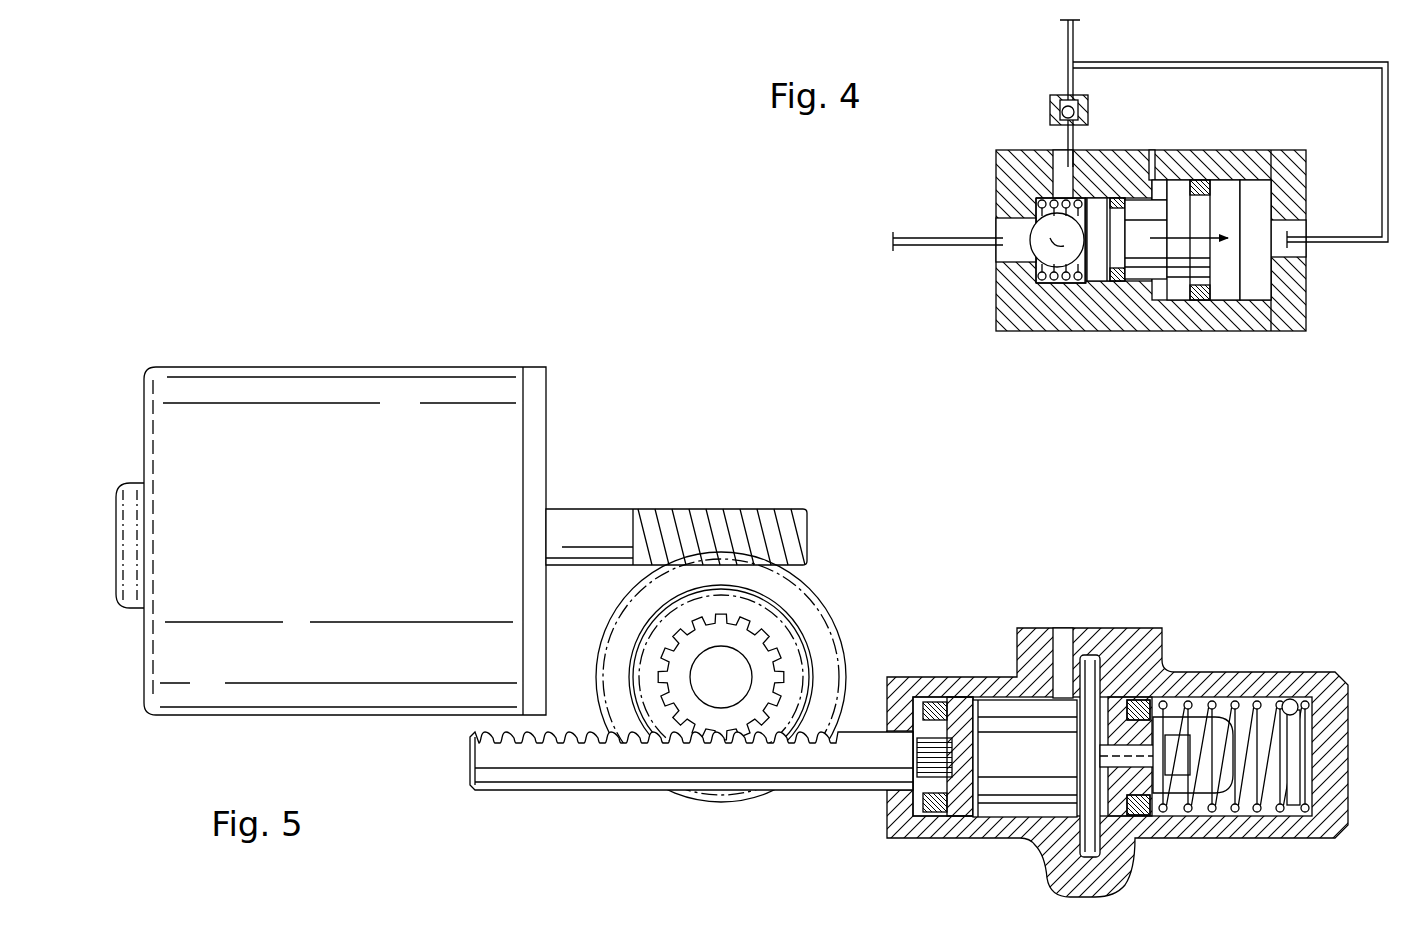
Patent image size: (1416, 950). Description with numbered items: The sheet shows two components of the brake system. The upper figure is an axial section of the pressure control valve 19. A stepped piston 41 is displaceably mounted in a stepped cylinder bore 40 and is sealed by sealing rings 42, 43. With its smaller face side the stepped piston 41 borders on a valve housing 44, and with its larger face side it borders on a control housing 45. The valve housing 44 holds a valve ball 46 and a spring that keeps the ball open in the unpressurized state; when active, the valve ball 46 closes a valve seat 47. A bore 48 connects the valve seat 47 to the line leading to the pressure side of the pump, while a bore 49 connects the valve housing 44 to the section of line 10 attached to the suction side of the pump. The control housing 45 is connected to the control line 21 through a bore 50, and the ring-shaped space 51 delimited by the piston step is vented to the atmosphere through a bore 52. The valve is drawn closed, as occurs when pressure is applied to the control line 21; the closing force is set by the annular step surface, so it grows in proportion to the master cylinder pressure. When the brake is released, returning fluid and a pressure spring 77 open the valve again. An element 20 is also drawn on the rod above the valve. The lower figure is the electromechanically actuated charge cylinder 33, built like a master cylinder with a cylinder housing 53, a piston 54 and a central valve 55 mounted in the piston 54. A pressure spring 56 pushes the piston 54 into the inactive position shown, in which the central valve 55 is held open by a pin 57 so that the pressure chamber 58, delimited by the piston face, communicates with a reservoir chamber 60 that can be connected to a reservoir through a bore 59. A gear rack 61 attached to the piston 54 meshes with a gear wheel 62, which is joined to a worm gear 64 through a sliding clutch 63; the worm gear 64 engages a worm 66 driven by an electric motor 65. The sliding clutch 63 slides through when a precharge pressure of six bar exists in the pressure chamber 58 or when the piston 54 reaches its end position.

In FIG. 4, the line 10 is at (956, 239).
In FIG. 4, the pressure control valve 19 is at (1306, 350).
In FIG. 4, the solenoid valve 20 is at (1052, 98).
In FIG. 4, the control line 21 is at (1327, 70).
In FIG. 4, the stepped cylinder bore 40 is at (1257, 200).
In FIG. 4, the stepped piston 41 is at (1178, 262).
In FIG. 4, the sealing ring 42 is at (1110, 283).
In FIG. 4, the sealing ring 43 is at (1200, 300).
In FIG. 4, the valve housing 44 is at (1063, 284).
In FIG. 4, the control housing 45 is at (1260, 273).
In FIG. 4, the valve ball 46 is at (1054, 254).
In FIG. 4, the valve seat 47 is at (1038, 262).
In FIG. 4, the bore 48 is at (1003, 243).
In FIG. 4, the bore 49 is at (1050, 182).
In FIG. 4, the bore 50 is at (1278, 239).
In FIG. 4, the ring-shaped space 51 is at (1161, 195).
In FIG. 4, the bore 52 is at (1152, 172).
In FIG. 4, the pressure spring 77 is at (1060, 200).
In FIG. 5, the charge cylinder 33 is at (992, 846).
In FIG. 5, the cylinder housing 53 is at (1283, 673).
In FIG. 5, the piston 54 is at (1122, 814).
In FIG. 5, the central valve 55 is at (1197, 792).
In FIG. 5, the pressure spring 56 is at (1264, 792).
In FIG. 5, the pin 57 is at (1092, 668).
In FIG. 5, the pressure chamber 58 is at (1298, 752).
In FIG. 5, the bore 59 is at (1063, 624).
In FIG. 5, the reservoir chamber 60 is at (1000, 705).
In FIG. 5, the gear rack 61 is at (531, 750).
In FIG. 5, the gear wheel 62 is at (760, 715).
In FIG. 5, the sliding clutch 63 is at (632, 718).
In FIG. 5, the worm gear 64 is at (840, 610).
In FIG. 5, the electric motor 65 is at (376, 354).
In FIG. 5, the worm 66 is at (693, 505).